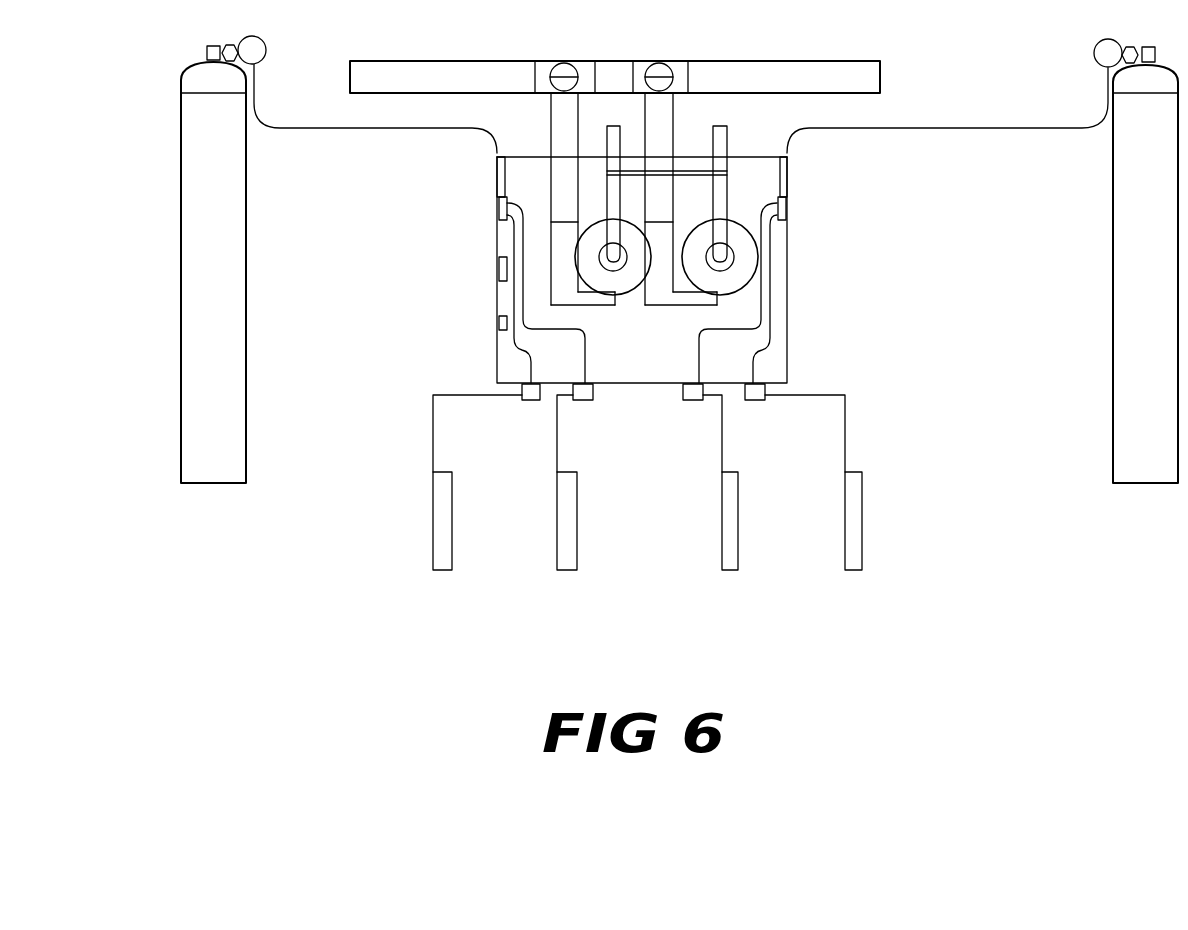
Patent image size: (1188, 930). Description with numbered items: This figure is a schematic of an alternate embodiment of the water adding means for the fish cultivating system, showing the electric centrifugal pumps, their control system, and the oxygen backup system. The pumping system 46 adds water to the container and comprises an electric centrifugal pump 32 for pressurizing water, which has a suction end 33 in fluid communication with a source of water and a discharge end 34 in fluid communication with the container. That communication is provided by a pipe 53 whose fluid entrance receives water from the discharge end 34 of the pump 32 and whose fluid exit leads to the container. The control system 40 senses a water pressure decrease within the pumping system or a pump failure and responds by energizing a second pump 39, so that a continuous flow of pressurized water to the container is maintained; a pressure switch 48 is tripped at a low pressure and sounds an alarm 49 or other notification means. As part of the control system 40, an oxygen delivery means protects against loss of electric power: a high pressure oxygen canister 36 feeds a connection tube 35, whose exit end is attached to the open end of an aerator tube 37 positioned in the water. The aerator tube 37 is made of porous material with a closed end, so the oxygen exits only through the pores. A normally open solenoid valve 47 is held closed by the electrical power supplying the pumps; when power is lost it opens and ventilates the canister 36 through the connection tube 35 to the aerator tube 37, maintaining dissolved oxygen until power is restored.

The electric centrifugal pump 32 is at (730, 280).
The suction end 33 is at (614, 140).
The discharge end 34 is at (567, 293).
The connection tube 35 is at (316, 129).
The oxygen canister 36 is at (181, 333).
The aerator tube 37 is at (563, 570).
The second pump 39 is at (628, 283).
The control system 40 is at (808, 300).
The pumping system 46 is at (747, 144).
The solenoid valve 47 is at (499, 210).
The pressure switch 48 is at (499, 270).
The alarm 49 is at (499, 323).
The pipe 53 is at (745, 61).